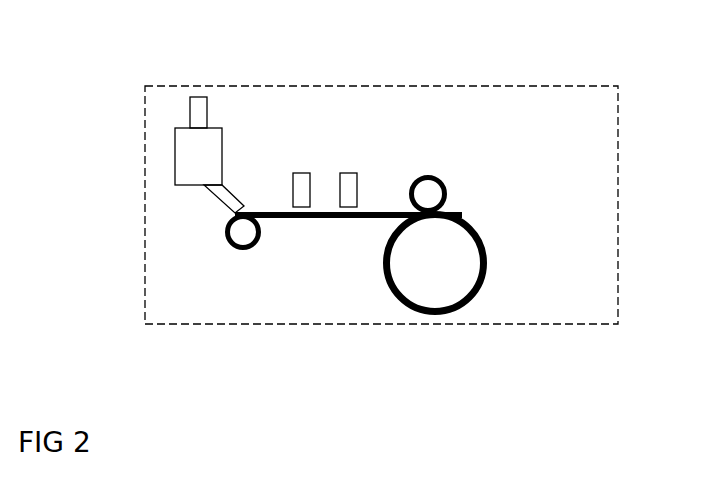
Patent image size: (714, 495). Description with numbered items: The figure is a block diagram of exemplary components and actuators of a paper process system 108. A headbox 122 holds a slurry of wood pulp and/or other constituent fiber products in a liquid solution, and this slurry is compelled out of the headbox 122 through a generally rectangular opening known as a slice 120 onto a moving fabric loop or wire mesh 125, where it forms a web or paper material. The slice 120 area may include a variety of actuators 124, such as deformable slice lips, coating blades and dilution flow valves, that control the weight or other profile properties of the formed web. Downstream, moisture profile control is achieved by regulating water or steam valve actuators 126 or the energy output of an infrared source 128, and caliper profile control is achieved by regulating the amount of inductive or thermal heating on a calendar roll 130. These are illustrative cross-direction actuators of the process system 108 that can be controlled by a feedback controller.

The paper process system 108 is at (347, 238).
The slice 120 is at (164, 202).
The headbox 122 is at (150, 141).
The actuators 124 is at (177, 232).
The wire mesh 125 is at (348, 292).
The water or steam valve actuators 126 is at (369, 113).
The infrared source 128 is at (423, 128).
The calendar roll 130 is at (485, 274).